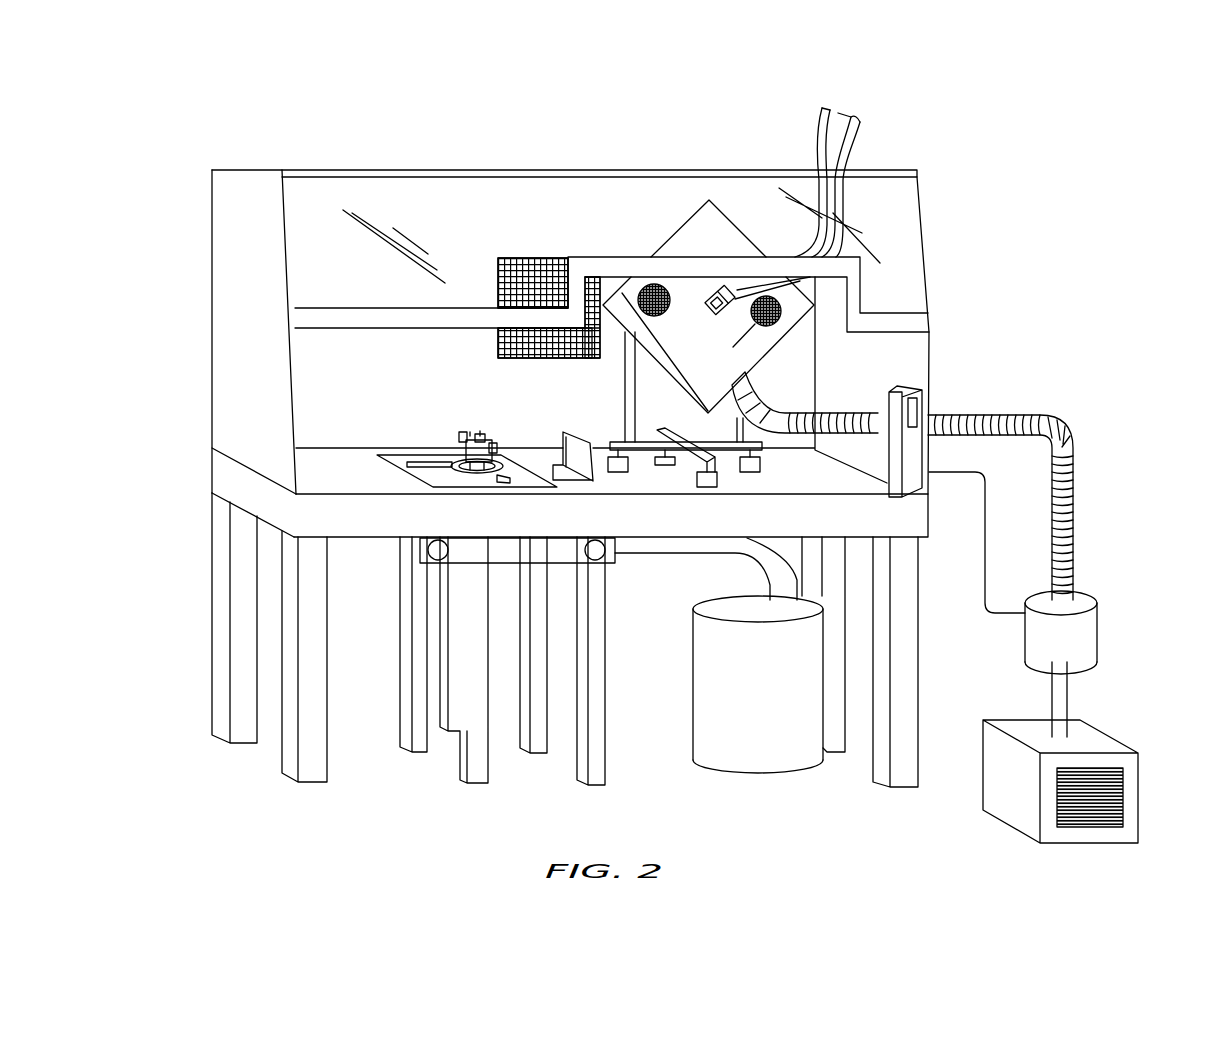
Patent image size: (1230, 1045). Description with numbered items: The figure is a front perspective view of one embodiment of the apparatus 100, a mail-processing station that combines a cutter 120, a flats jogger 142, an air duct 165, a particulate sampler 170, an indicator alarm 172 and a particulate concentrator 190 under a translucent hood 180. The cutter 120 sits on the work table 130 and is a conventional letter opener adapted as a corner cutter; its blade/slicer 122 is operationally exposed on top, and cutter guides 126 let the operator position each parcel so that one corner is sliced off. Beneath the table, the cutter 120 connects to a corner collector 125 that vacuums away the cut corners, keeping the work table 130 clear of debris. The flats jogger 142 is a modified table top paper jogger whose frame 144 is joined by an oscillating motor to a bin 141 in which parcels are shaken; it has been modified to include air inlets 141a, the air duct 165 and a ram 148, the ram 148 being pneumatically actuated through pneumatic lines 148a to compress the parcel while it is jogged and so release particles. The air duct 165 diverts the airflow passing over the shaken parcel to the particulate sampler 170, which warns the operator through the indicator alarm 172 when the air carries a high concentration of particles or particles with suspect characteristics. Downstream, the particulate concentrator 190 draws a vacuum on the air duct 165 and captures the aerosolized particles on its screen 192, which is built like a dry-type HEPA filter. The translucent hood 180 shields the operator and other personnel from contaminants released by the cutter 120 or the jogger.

The apparatus 100 is at (176, 183).
The cutter 120 is at (537, 551).
The blade/slicer 122 is at (470, 446).
The corner collector 125 is at (690, 773).
The cutter guides 126 is at (428, 463).
The work table 130 is at (332, 462).
The bin 141 is at (712, 220).
The air inlets 141a is at (646, 287).
The flats jogger 142 is at (675, 224).
The frame 144 is at (625, 440).
The ram 148 is at (673, 381).
The pneumatic lines 148a is at (830, 110).
The air duct 165 is at (826, 410).
The particulate sampler 170 is at (1025, 628).
The indicator alarm 172 is at (886, 468).
The translucent hood 180 is at (337, 230).
The particulate concentrator 190 is at (972, 790).
The screen 192 is at (1122, 817).